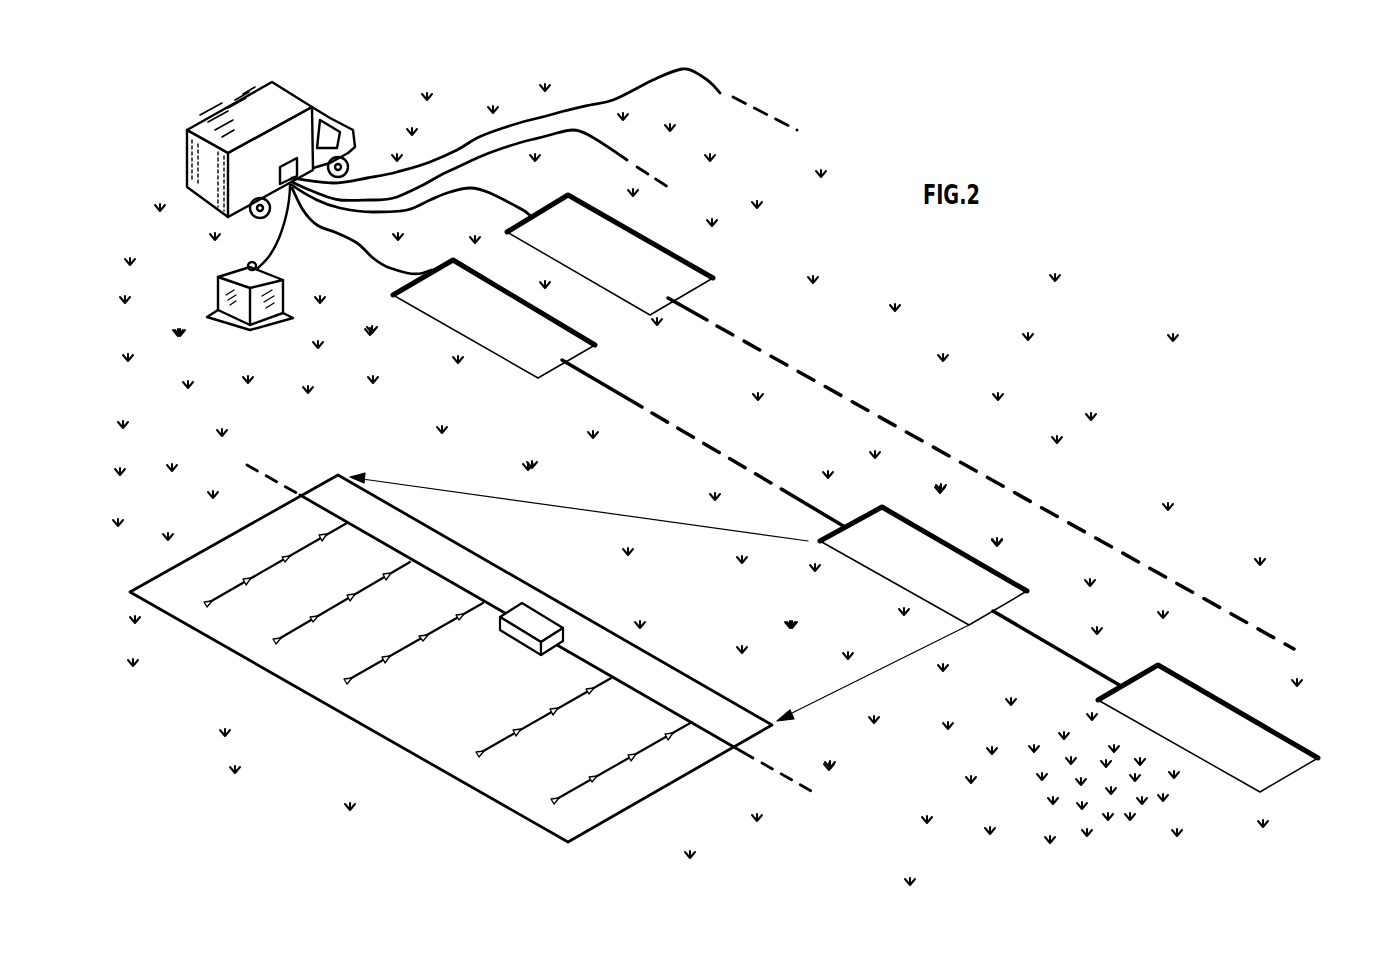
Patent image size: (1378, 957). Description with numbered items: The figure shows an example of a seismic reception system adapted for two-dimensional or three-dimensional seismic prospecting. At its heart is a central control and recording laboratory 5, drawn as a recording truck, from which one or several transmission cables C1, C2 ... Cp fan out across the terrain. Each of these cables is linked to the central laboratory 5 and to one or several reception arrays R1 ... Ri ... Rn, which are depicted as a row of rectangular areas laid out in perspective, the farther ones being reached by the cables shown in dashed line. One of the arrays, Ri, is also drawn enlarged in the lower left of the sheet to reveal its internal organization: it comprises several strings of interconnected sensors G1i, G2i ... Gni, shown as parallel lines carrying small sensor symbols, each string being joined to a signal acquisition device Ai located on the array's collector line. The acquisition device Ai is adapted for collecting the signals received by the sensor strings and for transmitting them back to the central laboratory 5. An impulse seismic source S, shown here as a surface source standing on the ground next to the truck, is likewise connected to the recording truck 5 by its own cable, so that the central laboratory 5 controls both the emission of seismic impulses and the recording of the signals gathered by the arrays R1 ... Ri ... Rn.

The central control and recording laboratory 5 is at (200, 120).
The impulse seismic source S is at (218, 307).
The first transmission cable C1 is at (358, 252).
The second transmission cable C2 is at (472, 198).
The p-th transmission cable Cp is at (717, 88).
The first reception array R1 is at (494, 333).
The i-th reception array Ri is at (932, 587).
The n-th reception array Rn is at (1220, 741).
The signal acquisition device Ai is at (539, 643).
The first string of interconnected sensors G1i is at (275, 573).
The second string of interconnected sensors G2i is at (341, 609).
The n-th string of interconnected sensors Gni is at (621, 770).